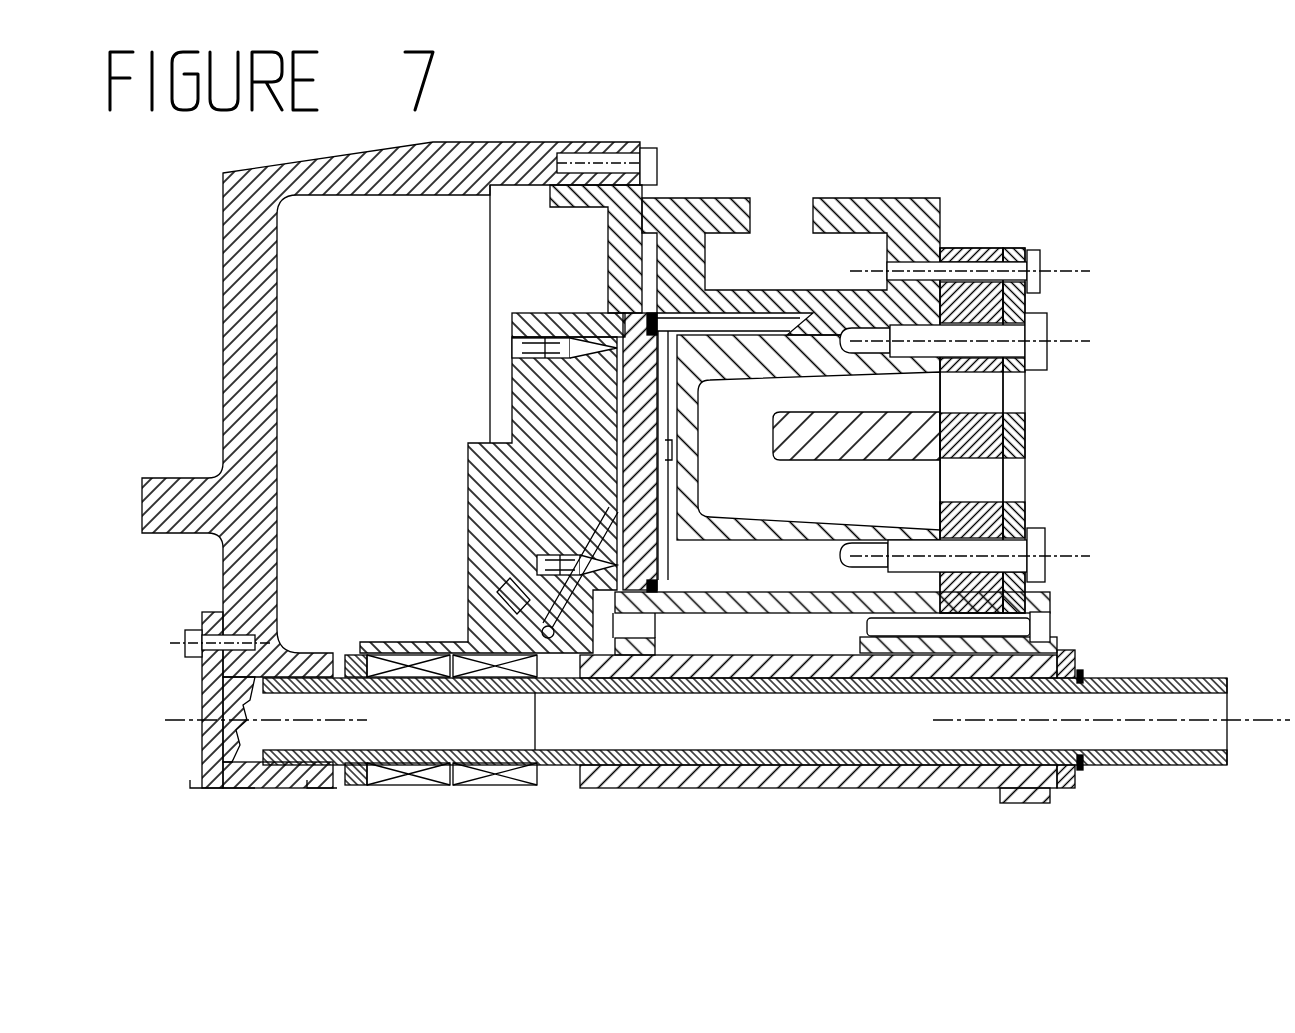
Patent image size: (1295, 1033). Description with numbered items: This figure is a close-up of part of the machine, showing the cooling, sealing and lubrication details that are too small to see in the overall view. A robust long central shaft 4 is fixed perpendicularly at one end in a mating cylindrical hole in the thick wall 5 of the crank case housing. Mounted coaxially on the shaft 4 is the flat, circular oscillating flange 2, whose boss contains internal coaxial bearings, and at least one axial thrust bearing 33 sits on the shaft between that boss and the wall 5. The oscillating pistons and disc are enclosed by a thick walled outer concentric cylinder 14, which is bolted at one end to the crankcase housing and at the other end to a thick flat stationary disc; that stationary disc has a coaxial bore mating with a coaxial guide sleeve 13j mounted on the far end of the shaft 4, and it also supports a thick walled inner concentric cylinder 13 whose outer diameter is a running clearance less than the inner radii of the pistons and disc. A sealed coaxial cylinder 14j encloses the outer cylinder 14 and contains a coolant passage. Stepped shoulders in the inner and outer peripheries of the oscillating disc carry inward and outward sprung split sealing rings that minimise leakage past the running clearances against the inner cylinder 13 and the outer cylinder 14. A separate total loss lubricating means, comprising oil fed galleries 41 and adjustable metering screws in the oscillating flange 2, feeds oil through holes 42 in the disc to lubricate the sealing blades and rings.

The oscillating flange 2 is at (535, 405).
The central shaft 4 is at (1130, 752).
The wall 5 is at (245, 278).
The inner concentric cylinder 13 is at (820, 602).
The guide sleeve 13j is at (769, 665).
The outer concentric cylinder 14 is at (764, 290).
The sealed coaxial cylinder 14j is at (865, 212).
The axial thrust bearing 33 is at (343, 677).
The lubricating oil fed galleries 41 is at (615, 478).
The holes 42 is at (628, 318).